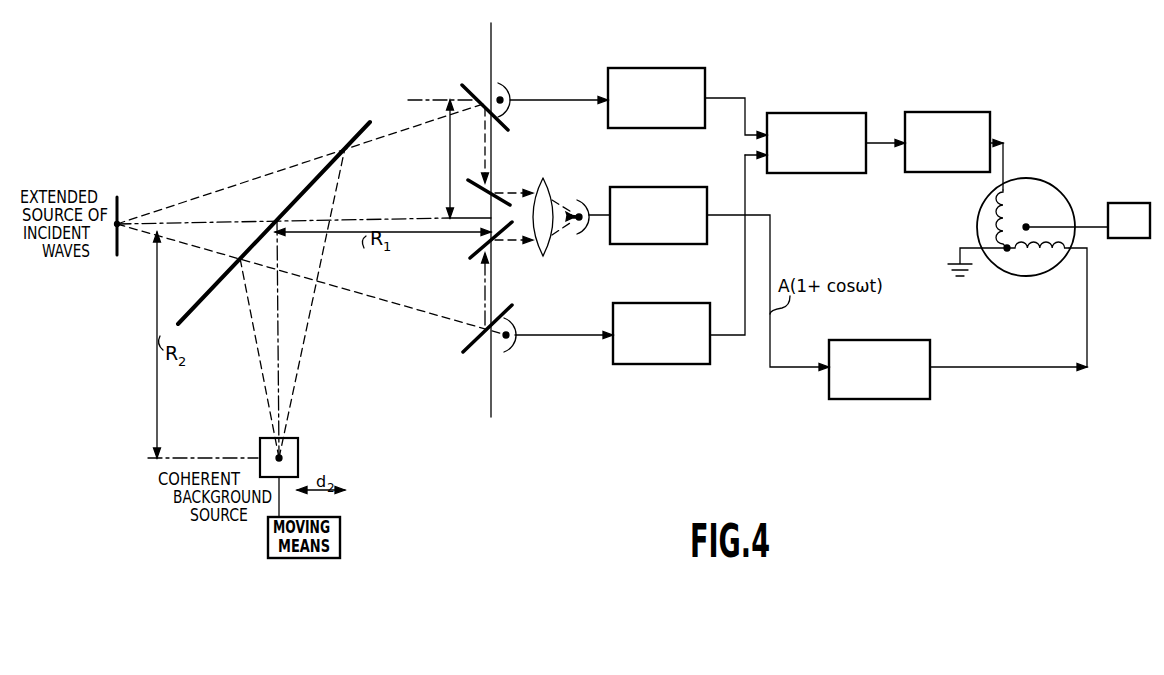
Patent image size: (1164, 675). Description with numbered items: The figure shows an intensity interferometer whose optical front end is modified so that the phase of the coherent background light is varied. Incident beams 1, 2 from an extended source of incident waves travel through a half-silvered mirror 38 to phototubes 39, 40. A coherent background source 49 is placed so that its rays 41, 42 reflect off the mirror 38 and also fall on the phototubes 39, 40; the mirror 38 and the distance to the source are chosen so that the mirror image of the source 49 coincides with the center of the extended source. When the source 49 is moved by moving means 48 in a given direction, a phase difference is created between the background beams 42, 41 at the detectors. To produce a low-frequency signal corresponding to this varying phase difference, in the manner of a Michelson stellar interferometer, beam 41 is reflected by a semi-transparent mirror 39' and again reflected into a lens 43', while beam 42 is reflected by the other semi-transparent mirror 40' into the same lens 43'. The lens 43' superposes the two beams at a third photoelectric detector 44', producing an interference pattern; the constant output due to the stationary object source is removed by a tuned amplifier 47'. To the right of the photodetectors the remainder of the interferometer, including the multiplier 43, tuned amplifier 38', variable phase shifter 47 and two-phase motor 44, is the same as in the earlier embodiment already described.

The incident beam 1 is at (397, 137).
The incident beam 2 is at (363, 300).
The half-silvered mirror 38 is at (274, 214).
The tuned amplifier 38' is at (947, 158).
The phototube 39 is at (515, 80).
The semi-transparent mirror 39' is at (472, 87).
The phototube 40 is at (521, 350).
The semi-transparent mirror 40' is at (473, 343).
The coherent background ray 41 is at (303, 330).
The coherent background ray 42 is at (252, 330).
The multiplier 43 is at (816, 159).
The lens 43' is at (552, 197).
The two-phase motor 44 is at (1049, 229).
The third photoelectric detector 44' is at (569, 238).
The variable phase shifter 47 is at (879, 384).
The tuned amplifier 47' is at (658, 229).
The moving means 48 is at (1125, 238).
The coherent background source 49 is at (298, 458).